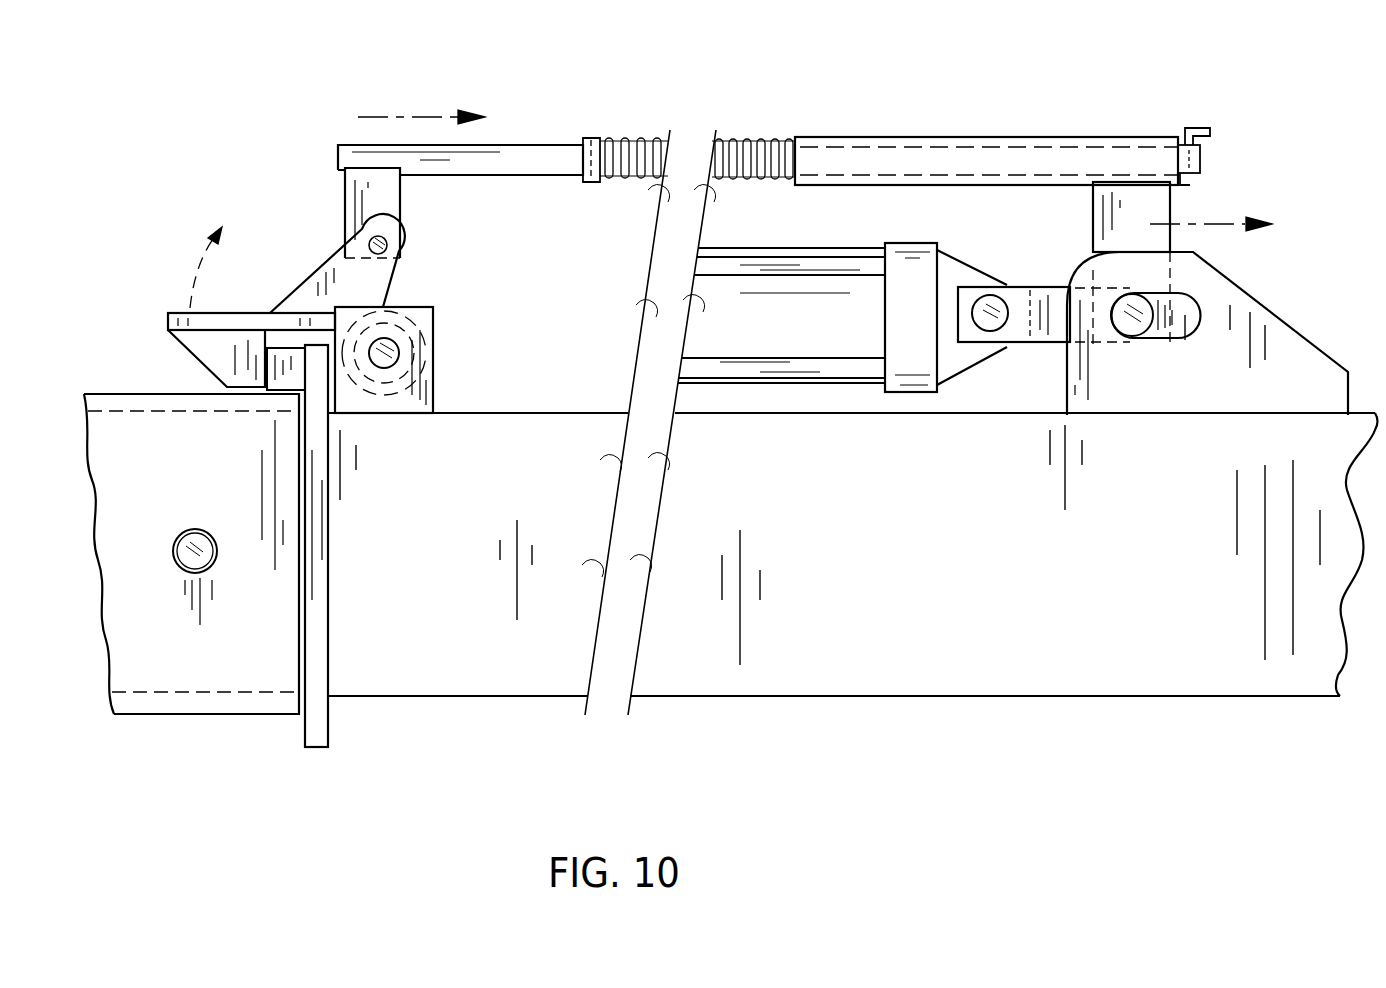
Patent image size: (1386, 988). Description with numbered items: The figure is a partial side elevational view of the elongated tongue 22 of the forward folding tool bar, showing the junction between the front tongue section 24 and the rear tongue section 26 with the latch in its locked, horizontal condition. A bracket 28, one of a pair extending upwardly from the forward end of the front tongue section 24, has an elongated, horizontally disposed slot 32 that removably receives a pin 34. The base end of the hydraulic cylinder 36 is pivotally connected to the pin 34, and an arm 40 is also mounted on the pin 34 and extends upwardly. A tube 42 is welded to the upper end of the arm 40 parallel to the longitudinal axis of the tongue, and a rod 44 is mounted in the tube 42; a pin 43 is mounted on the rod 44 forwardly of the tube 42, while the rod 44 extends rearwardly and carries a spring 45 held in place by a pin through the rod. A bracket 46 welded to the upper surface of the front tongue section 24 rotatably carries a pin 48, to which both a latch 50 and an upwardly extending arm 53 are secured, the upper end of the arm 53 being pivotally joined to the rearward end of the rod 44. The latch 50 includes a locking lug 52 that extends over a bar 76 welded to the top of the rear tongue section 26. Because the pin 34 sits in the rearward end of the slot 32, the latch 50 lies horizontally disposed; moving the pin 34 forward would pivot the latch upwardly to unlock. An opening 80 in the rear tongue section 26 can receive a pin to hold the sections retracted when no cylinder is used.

The elongated tongue 22 is at (928, 702).
The front tongue section 24 is at (1342, 503).
The rear tongue section 26 is at (243, 716).
The bracket 28 is at (1194, 402).
The slot 32 is at (1192, 294).
The pin 34 is at (1128, 336).
The hydraulic cylinder 36 is at (800, 247).
The arm 40 is at (1160, 207).
The tube 42 is at (1143, 137).
The pin 43 is at (1247, 156).
The rod 44 is at (760, 138).
The spring 45 is at (640, 135).
The bracket 46 is at (435, 392).
The pin 48 is at (395, 345).
The latch 50 is at (253, 308).
The locking lug 52 is at (185, 348).
The arm 53 is at (392, 277).
The bar 76 is at (272, 388).
The opening 80 is at (178, 565).